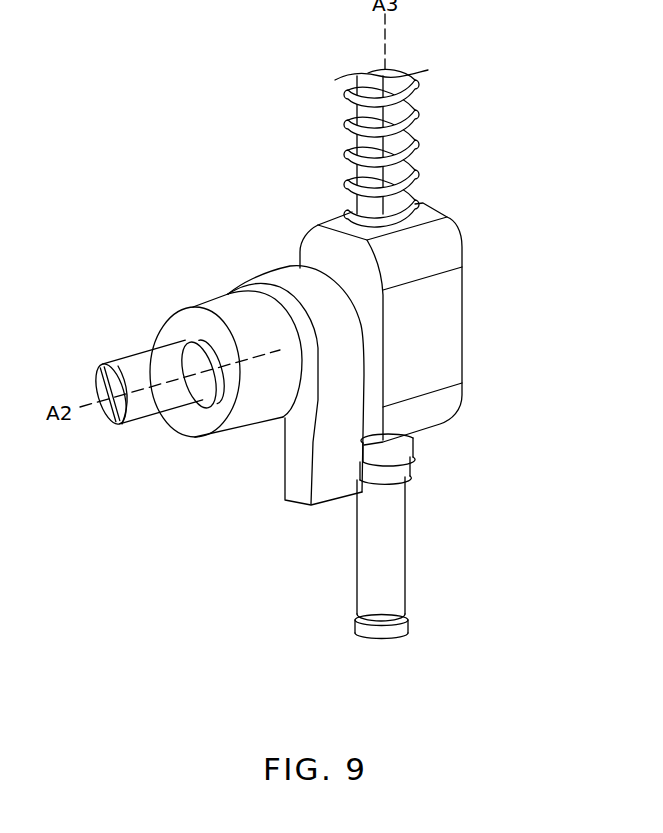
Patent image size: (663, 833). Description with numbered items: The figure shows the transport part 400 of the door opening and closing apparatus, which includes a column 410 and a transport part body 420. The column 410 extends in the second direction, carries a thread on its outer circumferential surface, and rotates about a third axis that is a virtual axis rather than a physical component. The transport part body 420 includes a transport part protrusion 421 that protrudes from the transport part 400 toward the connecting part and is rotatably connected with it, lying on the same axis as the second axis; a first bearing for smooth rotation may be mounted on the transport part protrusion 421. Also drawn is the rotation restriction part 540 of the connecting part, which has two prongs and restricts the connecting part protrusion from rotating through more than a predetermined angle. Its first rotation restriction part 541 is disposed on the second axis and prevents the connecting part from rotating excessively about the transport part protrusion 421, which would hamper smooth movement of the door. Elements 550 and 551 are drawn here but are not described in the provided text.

The transport part 400 is at (462, 203).
The column 410 is at (417, 150).
The transport part body 420 is at (457, 328).
The transport part protrusion 421 is at (148, 366).
The rotation restriction part 540 is at (289, 592).
The first rotation restriction part 541 is at (302, 505).
The driving unit 550 is at (210, 522).
The motor body 551 is at (207, 438).